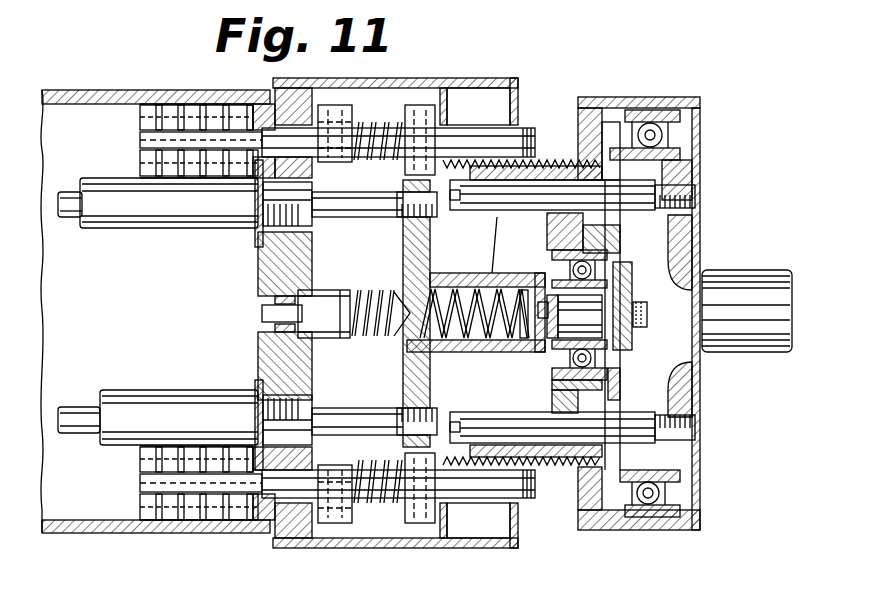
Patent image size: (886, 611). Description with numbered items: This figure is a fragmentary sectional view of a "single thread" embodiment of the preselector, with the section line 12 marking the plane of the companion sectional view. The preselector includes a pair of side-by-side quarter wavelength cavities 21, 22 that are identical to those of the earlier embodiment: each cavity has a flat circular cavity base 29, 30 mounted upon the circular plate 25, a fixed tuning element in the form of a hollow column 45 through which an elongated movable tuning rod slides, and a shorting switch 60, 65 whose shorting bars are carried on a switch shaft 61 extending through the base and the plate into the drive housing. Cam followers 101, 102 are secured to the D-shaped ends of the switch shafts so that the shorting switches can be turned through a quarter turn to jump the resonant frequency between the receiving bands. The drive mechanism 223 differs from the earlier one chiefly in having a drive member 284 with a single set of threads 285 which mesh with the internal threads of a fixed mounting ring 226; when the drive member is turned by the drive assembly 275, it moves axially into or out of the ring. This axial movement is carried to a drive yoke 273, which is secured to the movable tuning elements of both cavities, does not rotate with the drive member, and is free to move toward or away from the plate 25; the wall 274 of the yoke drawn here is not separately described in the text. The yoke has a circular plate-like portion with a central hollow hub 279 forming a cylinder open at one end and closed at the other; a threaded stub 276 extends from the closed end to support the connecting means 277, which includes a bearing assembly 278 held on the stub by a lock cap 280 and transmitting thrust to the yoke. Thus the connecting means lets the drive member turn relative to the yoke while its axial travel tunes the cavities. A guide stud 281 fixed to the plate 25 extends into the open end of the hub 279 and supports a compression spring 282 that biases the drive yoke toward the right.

The section line 12 is at (587, 53).
The cavity 21 is at (84, 272).
The cavity 22 is at (76, 474).
The circular plate 25 is at (313, 176).
The cavity base 29 is at (257, 262).
The cavity base 30 is at (257, 363).
The hollow column 45 is at (120, 218).
The shorting switch 60 is at (130, 157).
The switch shaft 61 is at (146, 140).
The shorting switch 65 is at (126, 494).
The cam follower 101 is at (415, 105).
The cam follower 102 is at (405, 523).
The drive mechanism 223 is at (531, 104).
The fixed mounting ring 226 is at (558, 477).
The drive yoke 273 is at (398, 258).
The partition wall 274 is at (403, 228).
The drive assembly 275 is at (748, 242).
The threaded stub 276 is at (545, 338).
The connecting means 277 is at (646, 390).
The bearing assembly 278 is at (552, 386).
The hollow hub 279 is at (474, 278).
The lock cap 280 is at (624, 342).
The guide stud 281 is at (318, 338).
The compression spring 282 is at (397, 338).
The drive member 284 is at (544, 227).
The single set of threads 285 is at (547, 160).